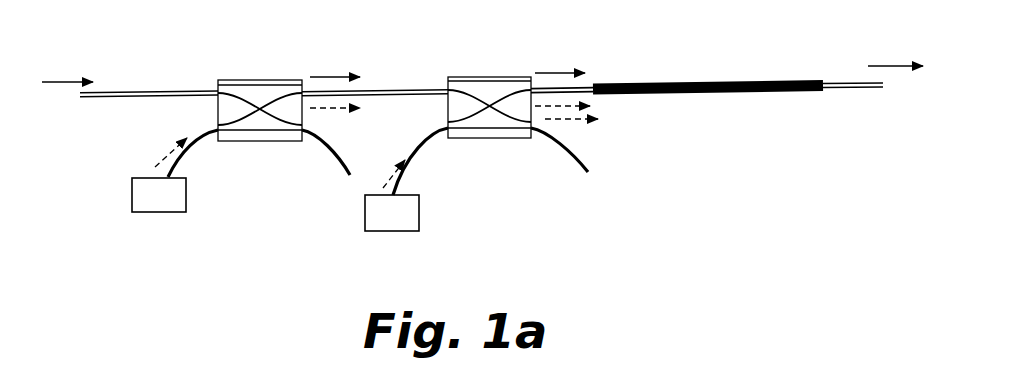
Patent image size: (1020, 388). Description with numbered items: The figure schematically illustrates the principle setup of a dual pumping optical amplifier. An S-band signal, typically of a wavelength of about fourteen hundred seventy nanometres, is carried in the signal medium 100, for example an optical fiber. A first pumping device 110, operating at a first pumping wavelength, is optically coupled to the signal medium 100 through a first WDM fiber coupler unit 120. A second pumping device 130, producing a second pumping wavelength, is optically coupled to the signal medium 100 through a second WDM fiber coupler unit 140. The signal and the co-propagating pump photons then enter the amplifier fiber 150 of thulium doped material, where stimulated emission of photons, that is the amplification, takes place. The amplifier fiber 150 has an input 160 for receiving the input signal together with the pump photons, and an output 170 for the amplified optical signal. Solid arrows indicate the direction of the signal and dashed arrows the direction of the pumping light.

The signal medium 100 is at (147, 91).
The first pumping device 110 is at (132, 186).
The first WDM fiber coupler unit 120 is at (268, 80).
The second pumping device 130 is at (419, 212).
The second WDM fiber coupler unit 140 is at (493, 77).
The amplifier fiber 150 is at (722, 80).
The input 160 is at (593, 82).
The output 170 is at (825, 80).